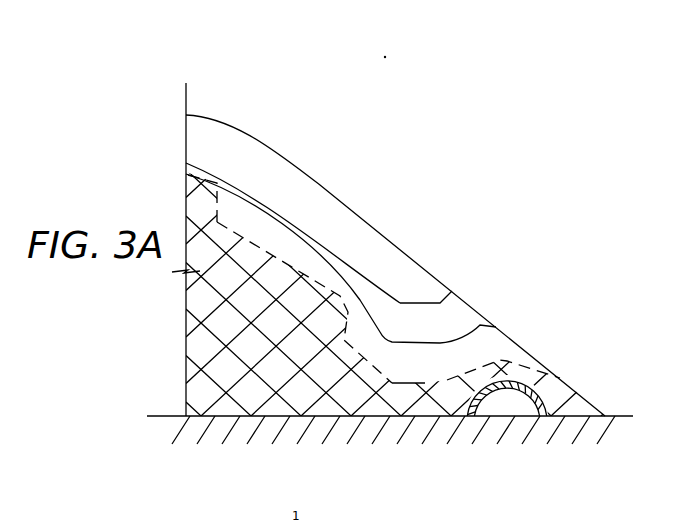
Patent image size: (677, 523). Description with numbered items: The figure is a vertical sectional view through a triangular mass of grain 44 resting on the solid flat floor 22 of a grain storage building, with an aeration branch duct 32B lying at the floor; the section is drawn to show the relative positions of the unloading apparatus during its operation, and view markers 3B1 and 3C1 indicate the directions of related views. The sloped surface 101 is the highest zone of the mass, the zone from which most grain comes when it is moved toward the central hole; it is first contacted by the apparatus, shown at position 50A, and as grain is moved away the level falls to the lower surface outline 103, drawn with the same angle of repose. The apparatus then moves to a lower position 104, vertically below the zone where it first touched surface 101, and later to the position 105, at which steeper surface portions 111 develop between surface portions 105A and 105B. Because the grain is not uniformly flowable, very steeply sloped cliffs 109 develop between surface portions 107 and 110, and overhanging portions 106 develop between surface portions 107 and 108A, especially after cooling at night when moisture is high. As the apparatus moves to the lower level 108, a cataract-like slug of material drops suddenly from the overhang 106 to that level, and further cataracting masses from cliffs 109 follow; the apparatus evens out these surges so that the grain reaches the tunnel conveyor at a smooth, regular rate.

The floor 22 is at (612, 416).
The mass of grain 44 is at (179, 386).
The aeration branch duct 32B is at (539, 388).
The sloped surface 101 is at (316, 150).
The lower surface outline 103 is at (319, 230).
The surface portion 105A is at (281, 210).
The surface portion 105B is at (410, 328).
The apparatus position 105 is at (428, 345).
The lower position 104 is at (431, 295).
The steeper surface portion 111 is at (367, 296).
The surface portion 107 is at (303, 273).
The cliff 109 is at (217, 203).
The surface portion 110 is at (190, 172).
The overhanging portion 106 is at (340, 326).
The surface portion 108A is at (392, 383).
The lower level 108 is at (432, 381).
The slope surface 50A is at (421, 236).
The section view direction 3C 3C1 is at (387, 192).
The section view direction 3B 3B1 is at (489, 282).